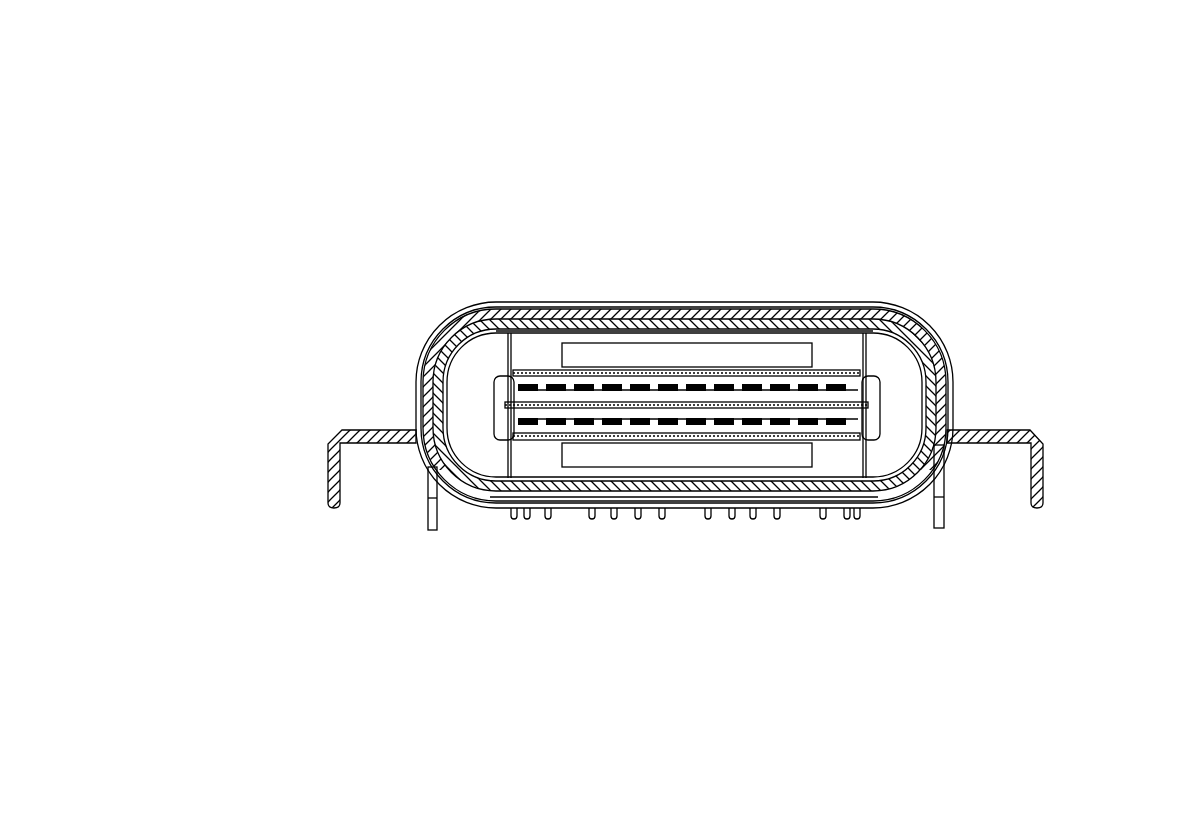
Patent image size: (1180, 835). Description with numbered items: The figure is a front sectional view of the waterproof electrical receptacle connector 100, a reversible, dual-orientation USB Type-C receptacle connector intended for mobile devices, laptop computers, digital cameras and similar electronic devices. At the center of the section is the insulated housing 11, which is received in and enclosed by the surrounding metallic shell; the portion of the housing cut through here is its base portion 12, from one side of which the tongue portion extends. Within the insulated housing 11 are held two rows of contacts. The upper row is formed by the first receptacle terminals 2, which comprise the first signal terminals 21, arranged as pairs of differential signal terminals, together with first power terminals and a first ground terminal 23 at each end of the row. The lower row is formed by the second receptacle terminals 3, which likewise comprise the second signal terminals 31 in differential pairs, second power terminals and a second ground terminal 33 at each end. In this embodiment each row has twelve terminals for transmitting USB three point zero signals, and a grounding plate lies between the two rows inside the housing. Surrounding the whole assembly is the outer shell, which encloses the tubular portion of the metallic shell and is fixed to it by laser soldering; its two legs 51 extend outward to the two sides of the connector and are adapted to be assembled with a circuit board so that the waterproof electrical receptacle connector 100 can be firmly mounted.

The waterproof electrical receptacle connector 100 is at (52, 39).
The insulated housing 11 is at (478, 298).
The base portion 12 is at (480, 498).
The first receptacle terminals 2 is at (832, 372).
The first signal terminals 21 is at (583, 386).
The first ground terminal 23 is at (532, 370).
The second receptacle terminals 3 is at (832, 442).
The second signal terminals 31 is at (583, 427).
The second ground terminal 33 is at (527, 442).
The legs 51 is at (1044, 460).